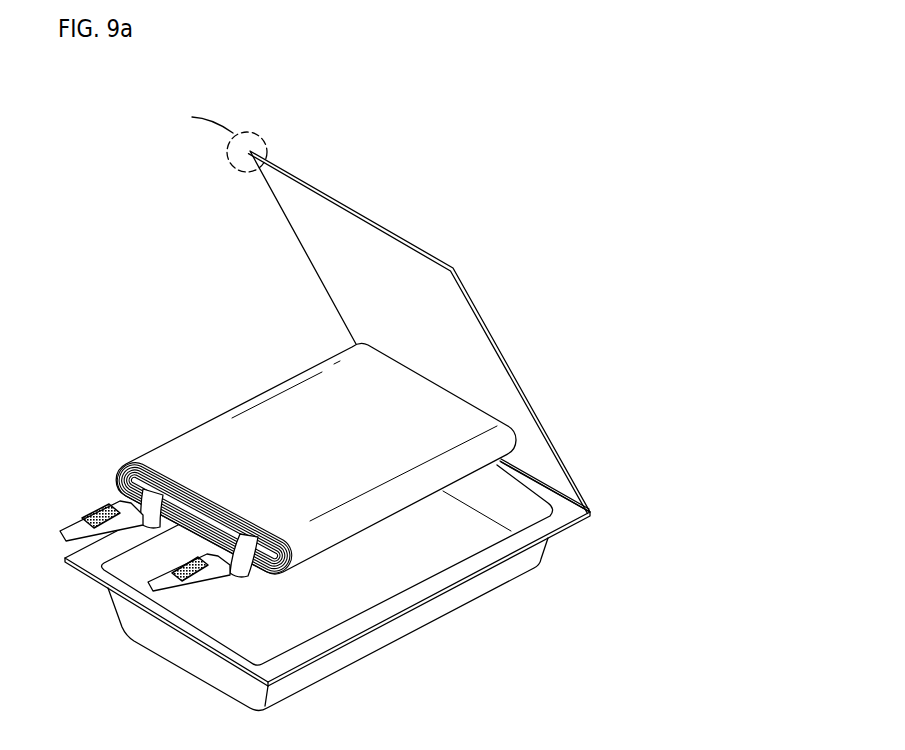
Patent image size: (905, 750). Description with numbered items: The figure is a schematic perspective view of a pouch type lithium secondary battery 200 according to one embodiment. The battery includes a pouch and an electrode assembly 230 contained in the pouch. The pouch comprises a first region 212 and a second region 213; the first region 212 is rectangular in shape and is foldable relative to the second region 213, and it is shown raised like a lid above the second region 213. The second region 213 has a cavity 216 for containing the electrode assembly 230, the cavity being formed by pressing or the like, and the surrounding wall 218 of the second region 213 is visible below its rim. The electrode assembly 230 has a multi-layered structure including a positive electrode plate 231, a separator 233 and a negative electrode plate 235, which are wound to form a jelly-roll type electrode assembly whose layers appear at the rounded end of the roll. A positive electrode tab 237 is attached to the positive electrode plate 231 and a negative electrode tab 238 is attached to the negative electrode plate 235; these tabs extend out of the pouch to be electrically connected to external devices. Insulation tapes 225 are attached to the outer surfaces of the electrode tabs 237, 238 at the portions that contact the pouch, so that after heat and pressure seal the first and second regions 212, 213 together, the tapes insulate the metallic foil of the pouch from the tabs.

The pouch type lithium secondary battery 200 is at (339, 410).
The first region 212 is at (555, 478).
The second region 213 is at (364, 586).
The cavity 216 is at (357, 592).
The side wall / bottom of case body 218 is at (222, 645).
The insulation tapes 225 is at (83, 510).
The electrode assembly 230 is at (274, 531).
The positive electrode plate 231 is at (125, 462).
The separator 233 is at (122, 473).
The negative electrode plate 235 is at (120, 482).
The positive electrode tab 237 is at (141, 503).
The negative electrode tab 238 is at (243, 577).